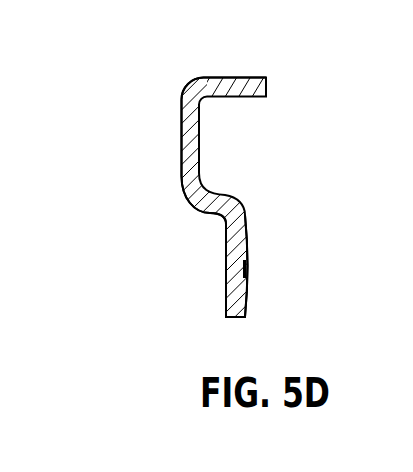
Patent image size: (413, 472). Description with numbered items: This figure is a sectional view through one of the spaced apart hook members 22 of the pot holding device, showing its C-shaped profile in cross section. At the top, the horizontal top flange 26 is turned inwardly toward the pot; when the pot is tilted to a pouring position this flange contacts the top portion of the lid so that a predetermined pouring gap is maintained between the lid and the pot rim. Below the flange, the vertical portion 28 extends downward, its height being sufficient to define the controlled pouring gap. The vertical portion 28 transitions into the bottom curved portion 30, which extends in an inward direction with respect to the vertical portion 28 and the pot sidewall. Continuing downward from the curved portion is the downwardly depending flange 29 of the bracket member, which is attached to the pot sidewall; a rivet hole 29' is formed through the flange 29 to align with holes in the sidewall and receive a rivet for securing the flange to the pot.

The hook member 22 is at (148, 128).
The horizontal top flange 26 is at (240, 76).
The vertical portion 28 is at (200, 138).
The bottom curved portion 30 is at (212, 190).
The rivet hole 29' is at (299, 240).
The downwardly depending flange 29 is at (292, 266).